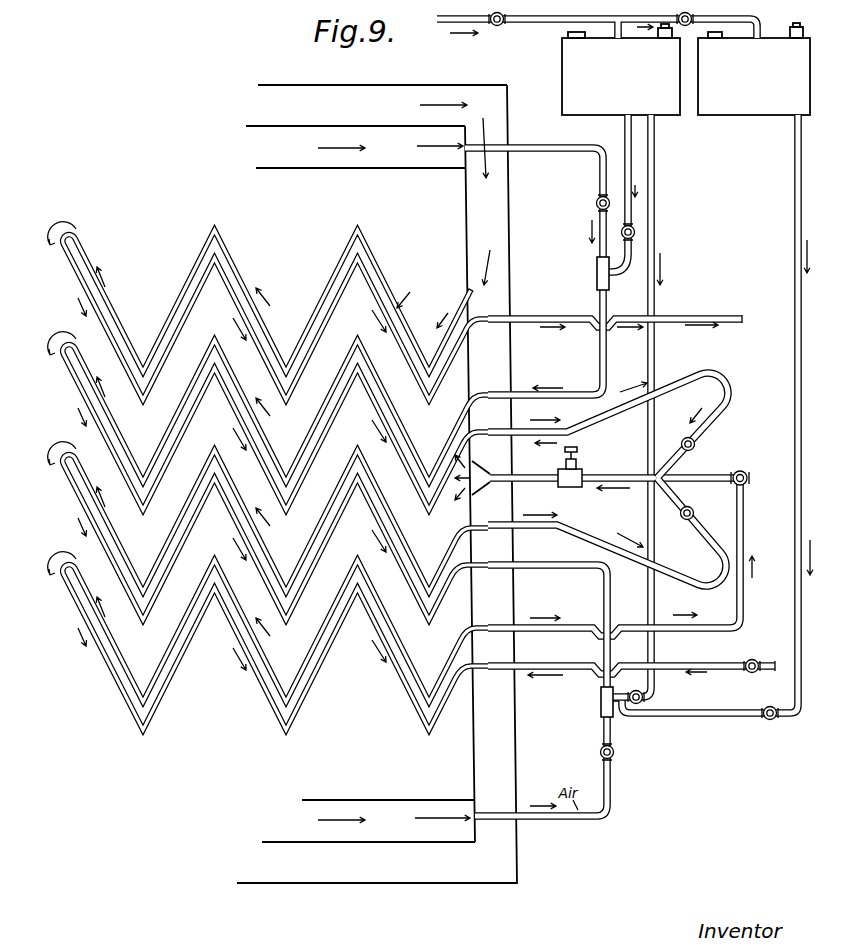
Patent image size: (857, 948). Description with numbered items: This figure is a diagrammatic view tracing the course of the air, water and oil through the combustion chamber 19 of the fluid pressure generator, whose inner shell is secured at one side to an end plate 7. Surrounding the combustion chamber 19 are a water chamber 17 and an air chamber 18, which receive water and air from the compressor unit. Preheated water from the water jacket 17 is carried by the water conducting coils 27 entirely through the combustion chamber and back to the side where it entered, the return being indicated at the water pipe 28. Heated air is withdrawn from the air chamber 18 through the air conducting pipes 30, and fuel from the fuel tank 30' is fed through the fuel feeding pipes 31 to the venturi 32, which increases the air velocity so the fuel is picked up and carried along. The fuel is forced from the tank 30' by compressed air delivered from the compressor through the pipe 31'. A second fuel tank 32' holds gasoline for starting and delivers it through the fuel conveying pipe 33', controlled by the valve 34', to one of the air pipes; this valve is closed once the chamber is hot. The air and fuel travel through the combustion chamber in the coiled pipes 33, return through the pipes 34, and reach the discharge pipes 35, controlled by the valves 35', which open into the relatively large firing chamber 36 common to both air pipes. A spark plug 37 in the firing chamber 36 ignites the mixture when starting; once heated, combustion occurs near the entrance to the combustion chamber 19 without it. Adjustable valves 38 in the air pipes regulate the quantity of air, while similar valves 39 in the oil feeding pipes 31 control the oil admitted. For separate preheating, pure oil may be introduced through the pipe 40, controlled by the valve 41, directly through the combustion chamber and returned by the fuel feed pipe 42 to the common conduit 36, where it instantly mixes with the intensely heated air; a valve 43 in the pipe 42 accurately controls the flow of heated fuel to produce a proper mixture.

The end plate 7 is at (382, 83).
The water chamber 17 is at (296, 102).
The air chamber 18 is at (305, 140).
The combustion chamber 19 is at (368, 192).
The water conducting coils 27 is at (380, 270).
The water pipe 28 is at (728, 315).
The air conducting pipes 30 is at (536, 498).
The fuel tank 30' is at (621, 69).
The fuel feeding pipes 31 is at (653, 409).
The compressed air pipe 31' is at (597, 33).
The venturi 32 is at (582, 487).
The fuel tank 32' is at (754, 69).
The coiled pipes 33 is at (275, 535).
The fuel conveying pipe 33' is at (705, 414).
The return pipes 34 is at (275, 535).
The valve 34' is at (770, 732).
The discharge pipes 35 is at (608, 463).
The valves 35' is at (716, 475).
The firing chamber 36 is at (612, 475).
The spark plug 37 is at (578, 453).
The adjustable valves 38 is at (595, 203).
The valves 39 is at (630, 225).
The oil pipe 40 is at (735, 663).
The valve 41 is at (755, 655).
The fuel feed pipe 42 is at (745, 543).
The valve 43 is at (748, 472).